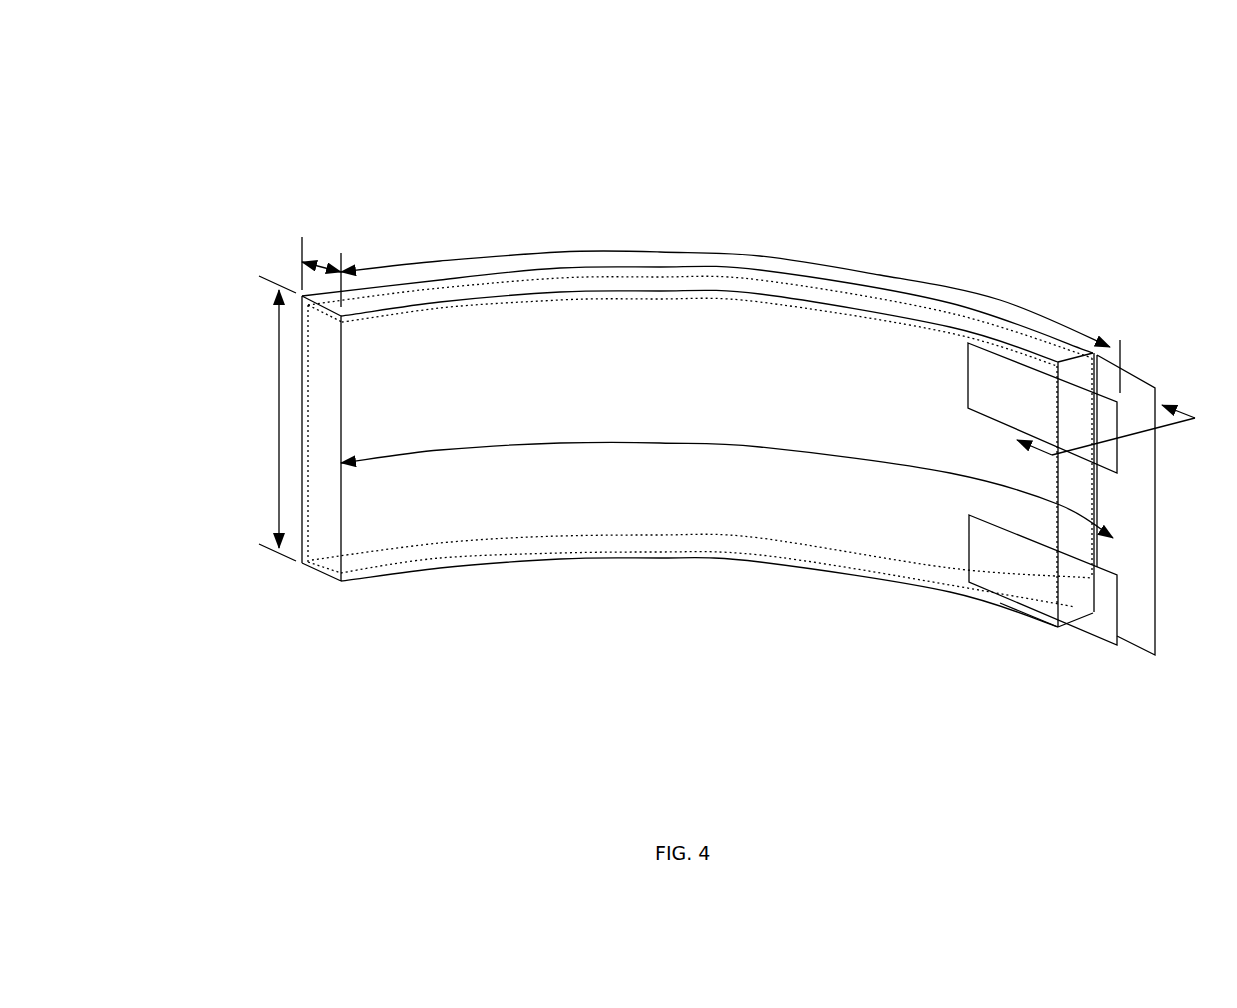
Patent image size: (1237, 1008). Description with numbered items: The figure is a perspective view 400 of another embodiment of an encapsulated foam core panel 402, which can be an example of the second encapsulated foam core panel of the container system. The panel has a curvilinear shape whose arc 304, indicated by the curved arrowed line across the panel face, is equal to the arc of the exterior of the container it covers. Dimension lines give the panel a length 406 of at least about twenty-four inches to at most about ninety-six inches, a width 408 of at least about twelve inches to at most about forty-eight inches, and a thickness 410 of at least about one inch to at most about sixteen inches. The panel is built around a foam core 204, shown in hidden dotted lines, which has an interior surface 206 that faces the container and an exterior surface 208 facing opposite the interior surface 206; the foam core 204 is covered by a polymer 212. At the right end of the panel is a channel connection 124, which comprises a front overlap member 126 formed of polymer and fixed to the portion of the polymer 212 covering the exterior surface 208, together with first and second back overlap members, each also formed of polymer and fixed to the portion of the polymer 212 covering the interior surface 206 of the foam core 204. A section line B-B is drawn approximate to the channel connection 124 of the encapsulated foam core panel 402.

The encapsulated foam core panel 402 is at (208, 79).
The perspective view 400 is at (1155, 676).
The length 406 is at (672, 252).
The thickness 410 is at (320, 262).
The width 408 is at (278, 423).
The arc 304 is at (672, 443).
The channel connection 124 is at (1147, 363).
The front overlap member 126 is at (1155, 490).
The foam core 204 is at (1098, 577).
The exterior surface 208 is at (1078, 598).
The interior surface 206 is at (1042, 613).
The polymer 212 is at (1060, 627).